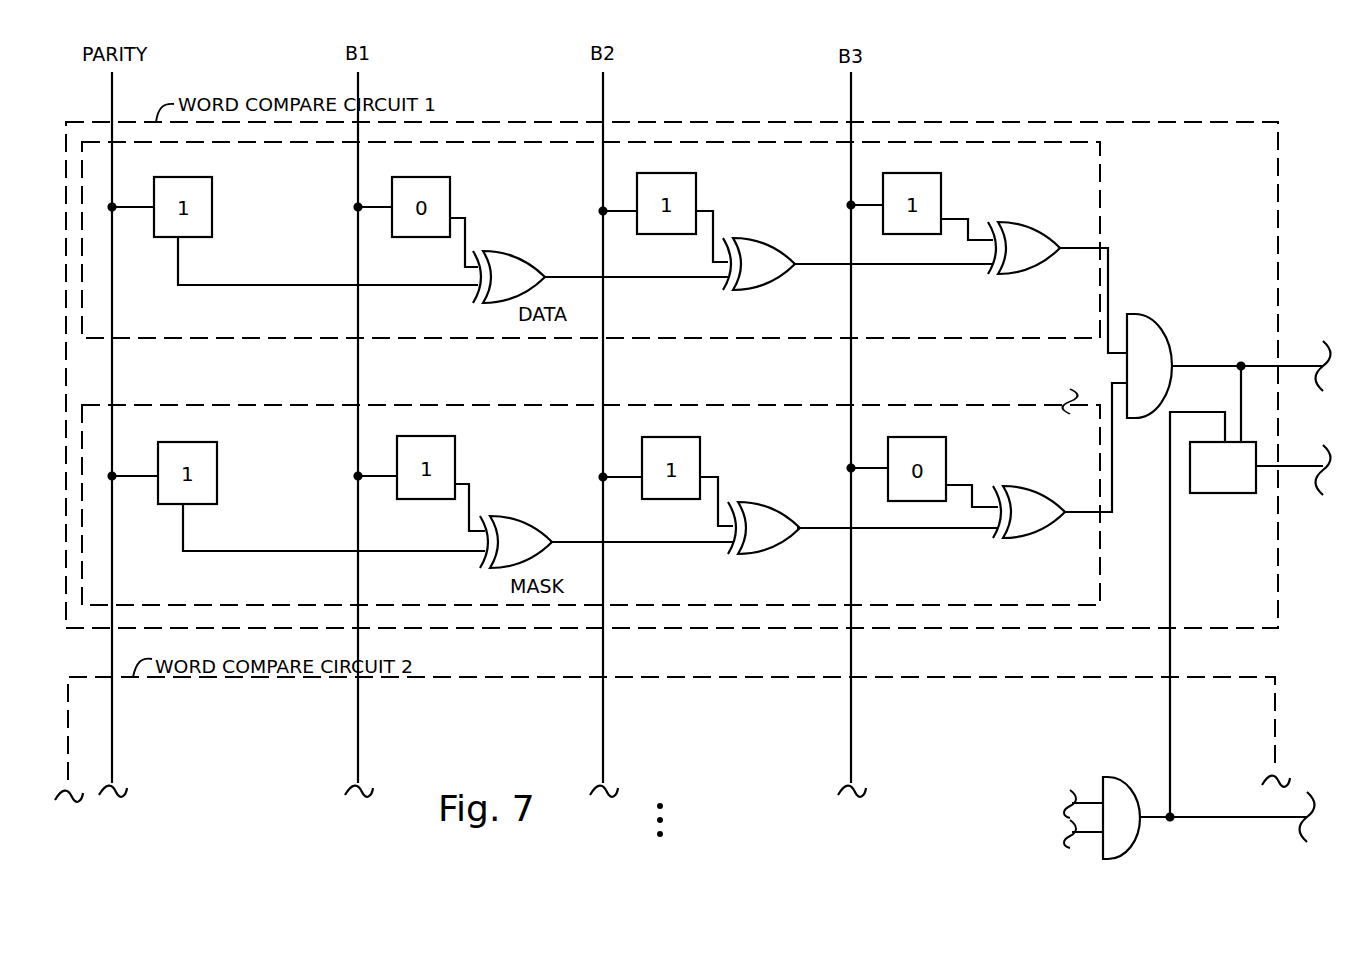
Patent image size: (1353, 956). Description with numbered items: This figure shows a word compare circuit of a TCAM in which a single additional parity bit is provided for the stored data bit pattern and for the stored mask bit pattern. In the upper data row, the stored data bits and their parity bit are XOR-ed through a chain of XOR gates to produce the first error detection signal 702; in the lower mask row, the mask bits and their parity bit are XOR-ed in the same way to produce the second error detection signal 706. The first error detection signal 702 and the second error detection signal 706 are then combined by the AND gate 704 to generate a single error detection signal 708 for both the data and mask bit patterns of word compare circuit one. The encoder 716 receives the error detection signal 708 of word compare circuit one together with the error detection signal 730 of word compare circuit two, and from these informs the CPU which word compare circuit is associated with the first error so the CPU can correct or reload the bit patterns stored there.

The first error detection signal 702 is at (1079, 253).
The AND gate 704 is at (1150, 313).
The second error detection signal 706 is at (1073, 509).
The error detection signal 708 is at (1200, 364).
The encoder 716 is at (1250, 591).
The error detection signal 730 is at (1212, 820).